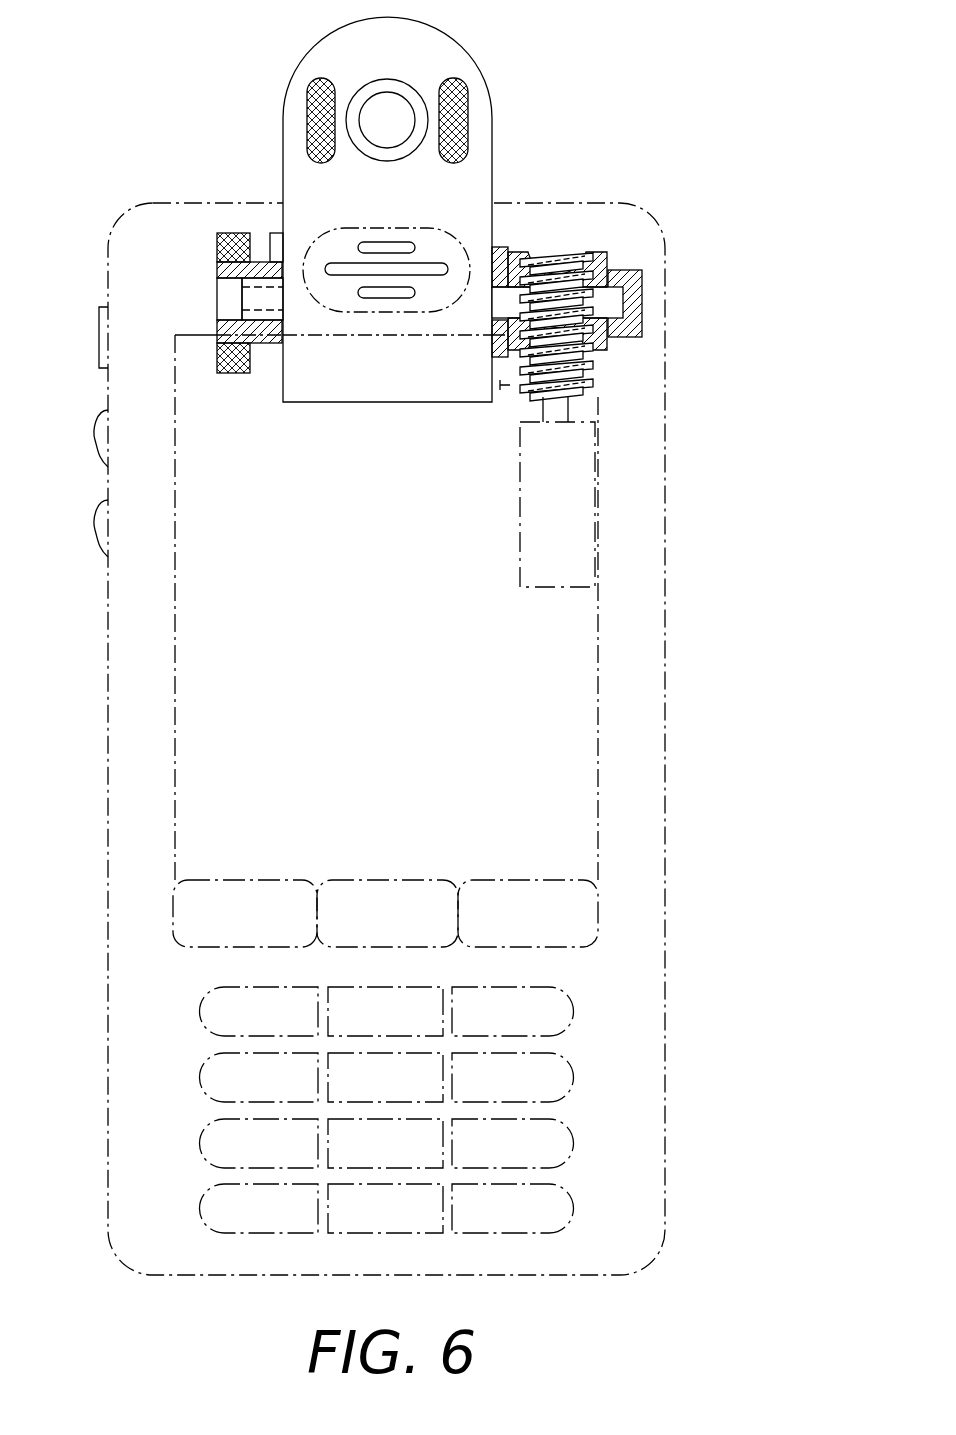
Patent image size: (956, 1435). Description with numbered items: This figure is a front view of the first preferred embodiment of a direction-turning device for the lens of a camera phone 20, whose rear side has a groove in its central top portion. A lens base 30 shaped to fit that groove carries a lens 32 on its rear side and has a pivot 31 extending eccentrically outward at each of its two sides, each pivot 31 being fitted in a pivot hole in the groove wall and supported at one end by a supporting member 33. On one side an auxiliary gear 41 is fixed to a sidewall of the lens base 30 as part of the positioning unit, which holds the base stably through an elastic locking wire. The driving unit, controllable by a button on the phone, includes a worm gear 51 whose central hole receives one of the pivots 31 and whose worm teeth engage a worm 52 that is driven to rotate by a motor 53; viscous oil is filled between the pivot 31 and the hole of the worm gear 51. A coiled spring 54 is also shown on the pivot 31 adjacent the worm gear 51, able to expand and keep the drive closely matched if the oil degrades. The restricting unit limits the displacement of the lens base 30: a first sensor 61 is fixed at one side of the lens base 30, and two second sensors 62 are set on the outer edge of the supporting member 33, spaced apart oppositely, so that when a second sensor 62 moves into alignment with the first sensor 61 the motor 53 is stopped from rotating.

The camera phone 20 is at (637, 583).
The lens base 30 is at (492, 128).
The pivot 31 is at (262, 264).
The lens 32 is at (383, 110).
The supporting member 33 is at (232, 275).
The auxiliary gear 41 is at (500, 250).
The worm gear 51 is at (603, 257).
The worm 52 is at (596, 368).
The motor 53 is at (580, 497).
The coiled spring 54 is at (558, 395).
The first sensor 61 is at (276, 238).
The second sensor 62 is at (225, 240).